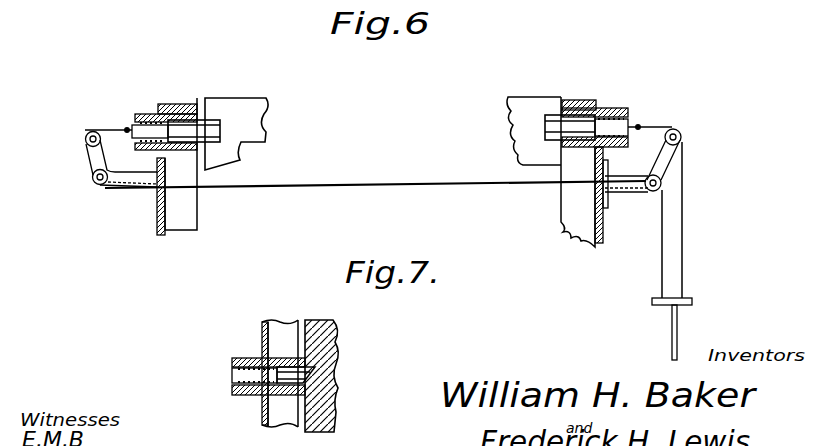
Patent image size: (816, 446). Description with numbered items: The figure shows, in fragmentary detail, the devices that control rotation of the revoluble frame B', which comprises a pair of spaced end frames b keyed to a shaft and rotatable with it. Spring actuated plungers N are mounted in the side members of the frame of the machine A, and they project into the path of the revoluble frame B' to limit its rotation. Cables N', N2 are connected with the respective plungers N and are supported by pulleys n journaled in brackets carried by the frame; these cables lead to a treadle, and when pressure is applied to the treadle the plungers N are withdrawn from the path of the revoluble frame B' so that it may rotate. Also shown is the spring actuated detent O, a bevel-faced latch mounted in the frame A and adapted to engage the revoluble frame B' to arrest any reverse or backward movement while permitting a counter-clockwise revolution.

In FIG. 6, the spring actuated plunger N is at (380, 109).
In FIG. 6, the pulley n is at (86, 132).
In FIG. 6, the cable N' is at (375, 197).
In FIG. 6, the frame of the machine A is at (185, 217).
In FIG. 7, the frame of the machine A is at (262, 333).
In FIG. 6, the revoluble frame B' is at (249, 134).
In FIG. 7, the revoluble frame B' is at (335, 371).
In FIG. 6, the end frame b is at (388, 132).
In FIG. 6, the cable N2 is at (684, 213).
In FIG. 7, the spring actuated detent O is at (260, 398).